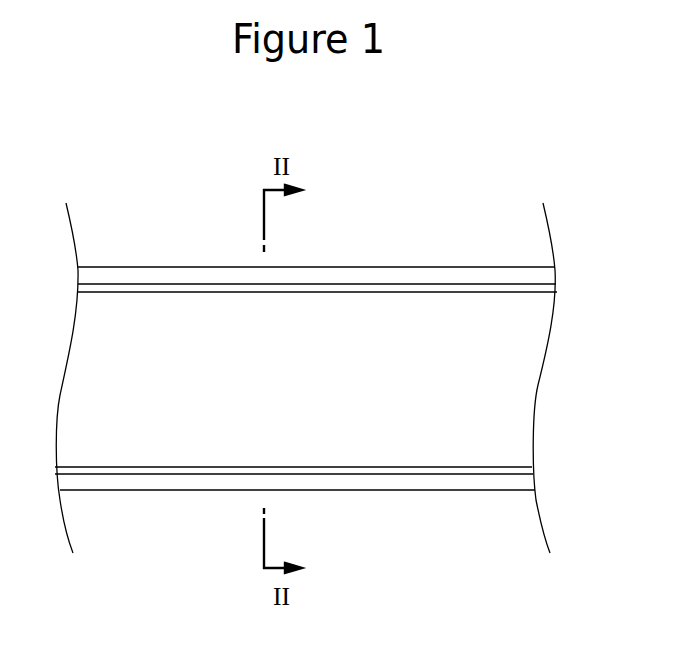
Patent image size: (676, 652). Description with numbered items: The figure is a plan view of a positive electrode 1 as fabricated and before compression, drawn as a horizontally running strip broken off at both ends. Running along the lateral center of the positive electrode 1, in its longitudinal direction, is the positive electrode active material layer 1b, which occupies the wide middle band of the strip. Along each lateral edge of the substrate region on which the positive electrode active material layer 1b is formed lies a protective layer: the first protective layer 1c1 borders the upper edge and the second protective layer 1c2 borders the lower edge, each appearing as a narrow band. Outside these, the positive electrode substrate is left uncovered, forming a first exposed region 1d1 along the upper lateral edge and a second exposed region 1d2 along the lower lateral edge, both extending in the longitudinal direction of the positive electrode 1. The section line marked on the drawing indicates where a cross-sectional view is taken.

The positive electrode 1 is at (386, 122).
The positive electrode active material layer 1b is at (420, 300).
The first protective layer 1c1 is at (364, 288).
The second protective layer 1c2 is at (397, 470).
The first exposed region 1d1 is at (176, 276).
The second exposed region 1d2 is at (183, 482).